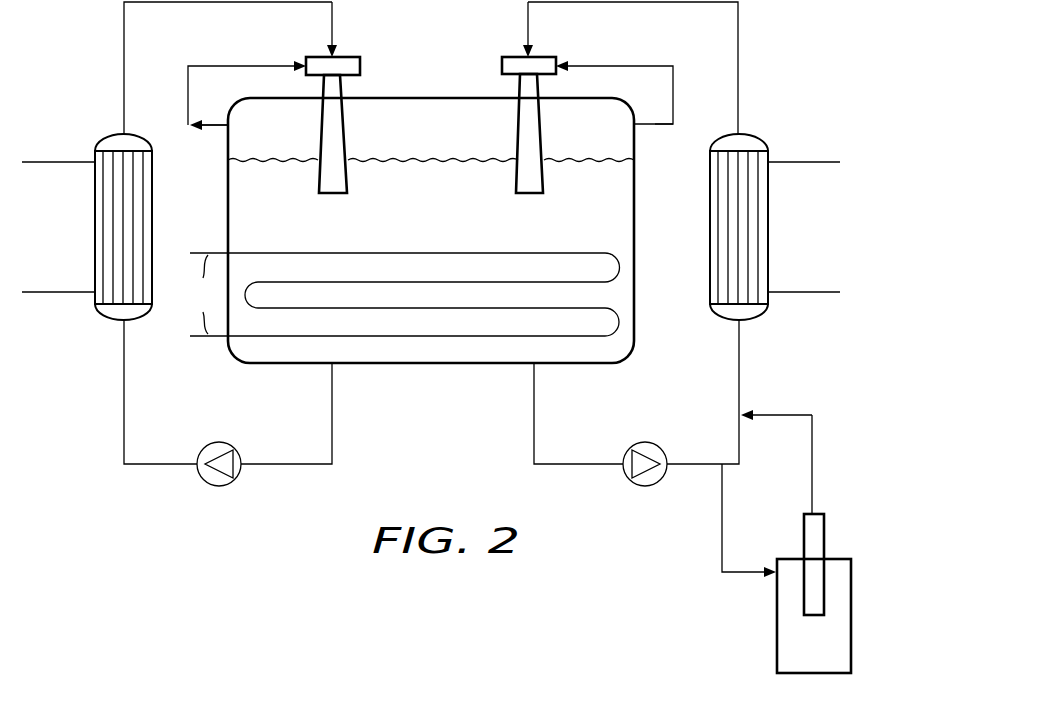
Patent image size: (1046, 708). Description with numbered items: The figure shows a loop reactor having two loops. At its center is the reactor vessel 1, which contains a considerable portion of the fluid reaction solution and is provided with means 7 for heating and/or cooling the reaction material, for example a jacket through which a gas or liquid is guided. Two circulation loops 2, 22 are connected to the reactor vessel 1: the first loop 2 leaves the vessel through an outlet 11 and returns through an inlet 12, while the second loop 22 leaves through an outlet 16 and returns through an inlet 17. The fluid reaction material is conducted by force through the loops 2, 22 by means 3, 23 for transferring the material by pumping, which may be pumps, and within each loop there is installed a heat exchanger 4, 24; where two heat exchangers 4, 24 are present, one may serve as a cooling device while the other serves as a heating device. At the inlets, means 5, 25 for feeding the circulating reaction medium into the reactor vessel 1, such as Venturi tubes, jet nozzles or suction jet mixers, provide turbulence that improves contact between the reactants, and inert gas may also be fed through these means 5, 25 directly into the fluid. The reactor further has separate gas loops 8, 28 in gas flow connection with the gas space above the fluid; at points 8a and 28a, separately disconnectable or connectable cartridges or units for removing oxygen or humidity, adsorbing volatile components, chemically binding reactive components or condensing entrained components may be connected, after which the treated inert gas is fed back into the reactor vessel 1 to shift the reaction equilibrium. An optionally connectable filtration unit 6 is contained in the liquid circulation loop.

The reactor vessel 1 is at (636, 218).
The loop 2 is at (740, 52).
The means for transferring the fluid reaction material by pumping 3 is at (681, 426).
The heat exchanger 4 is at (770, 218).
The means for feeding the fluid reaction medium into the reactor vessel 5 is at (541, 135).
The filtration unit 6 is at (786, 520).
The means for heating and/or cooling of the reaction material 7 is at (405, 294).
The gas loop 8 is at (625, 92).
The point 8a is at (680, 136).
The outlet 11 is at (578, 413).
The inlet 12 is at (549, 29).
The outlet 16 is at (286, 413).
The inlet 17 is at (317, 29).
The loop 22 is at (124, 16).
The means for transferring the fluid reaction material by pumping 23 is at (182, 425).
The heat exchanger 24 is at (95, 212).
The means for feeding the fluid reaction medium into the reactor vessel 25 is at (322, 120).
The gas loop 28 is at (234, 90).
The point 28a is at (191, 138).